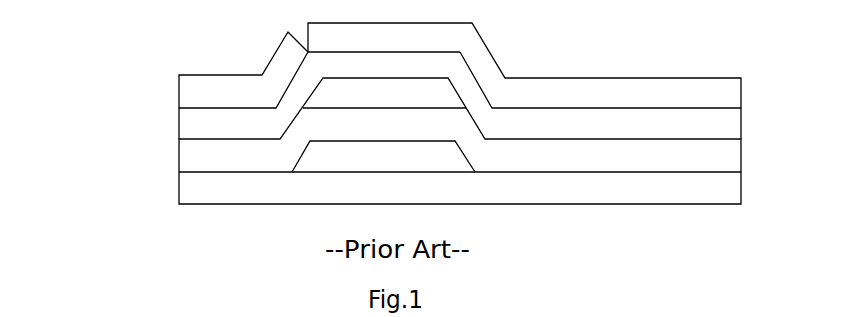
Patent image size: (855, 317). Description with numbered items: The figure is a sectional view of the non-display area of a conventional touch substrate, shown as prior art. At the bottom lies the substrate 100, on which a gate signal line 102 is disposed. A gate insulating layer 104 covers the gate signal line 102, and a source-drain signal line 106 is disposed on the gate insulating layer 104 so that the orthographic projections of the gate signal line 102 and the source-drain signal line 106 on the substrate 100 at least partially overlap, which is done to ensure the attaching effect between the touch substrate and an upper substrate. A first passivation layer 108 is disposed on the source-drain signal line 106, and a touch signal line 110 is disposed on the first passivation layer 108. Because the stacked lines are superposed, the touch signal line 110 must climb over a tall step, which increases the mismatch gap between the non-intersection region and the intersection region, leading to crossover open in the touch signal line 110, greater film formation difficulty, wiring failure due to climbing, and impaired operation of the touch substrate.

The substrate 100 is at (215, 198).
The gate signal line 102 is at (340, 166).
The gate insulating layer 104 is at (215, 146).
The source-drain signal line 106 is at (343, 95).
The first passivation layer 108 is at (215, 125).
The touch signal line 110 is at (283, 53).